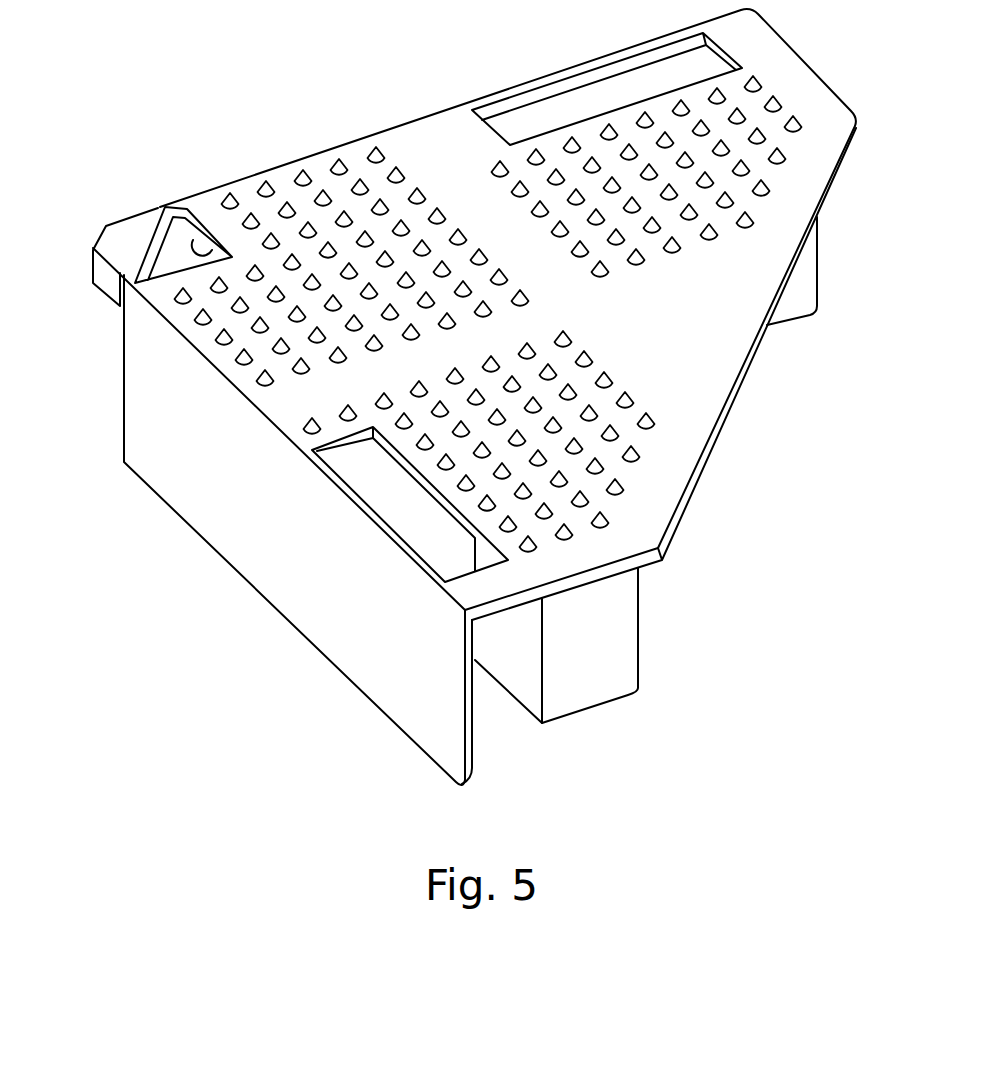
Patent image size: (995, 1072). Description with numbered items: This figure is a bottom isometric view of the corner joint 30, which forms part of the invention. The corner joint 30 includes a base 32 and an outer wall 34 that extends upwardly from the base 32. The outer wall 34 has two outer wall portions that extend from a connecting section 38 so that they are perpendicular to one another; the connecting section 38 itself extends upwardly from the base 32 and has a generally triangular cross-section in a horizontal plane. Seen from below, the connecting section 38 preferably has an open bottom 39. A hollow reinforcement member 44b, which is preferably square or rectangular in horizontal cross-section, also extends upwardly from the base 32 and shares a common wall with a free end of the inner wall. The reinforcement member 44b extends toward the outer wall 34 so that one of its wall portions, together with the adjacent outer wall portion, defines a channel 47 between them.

The corner joint 30 is at (459, 397).
The base 32 is at (743, 378).
The outer wall 34 is at (312, 557).
The connecting section 38 is at (192, 238).
The open bottom 39 is at (186, 264).
The hollow reinforcement member 44b is at (638, 622).
The channel 47 is at (502, 669).